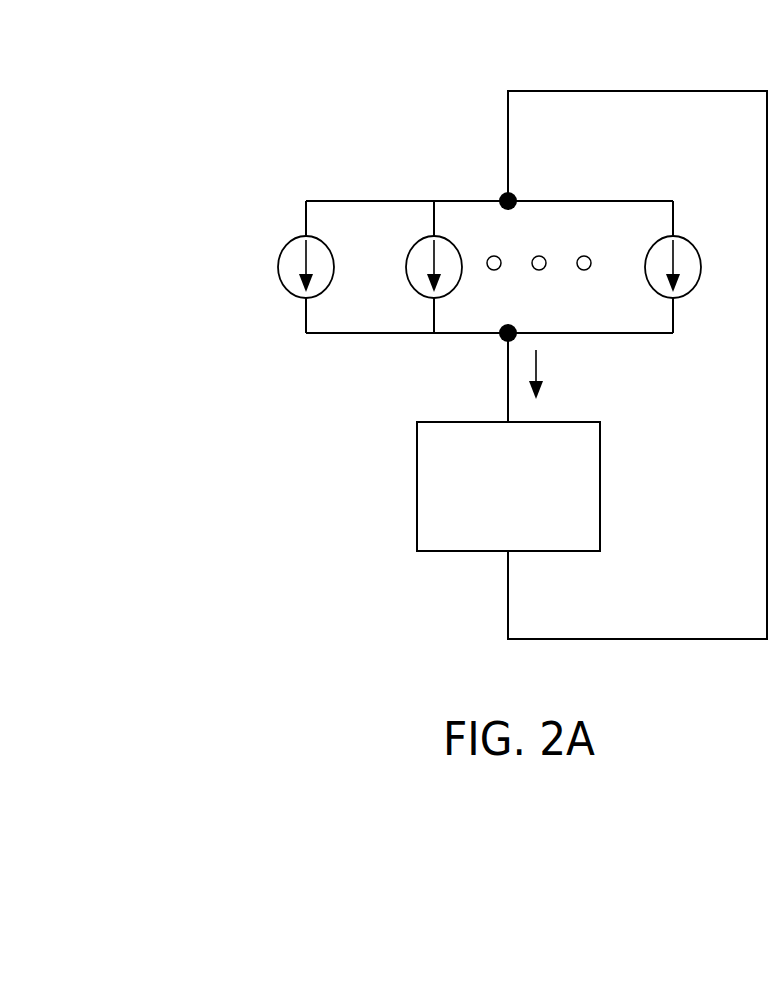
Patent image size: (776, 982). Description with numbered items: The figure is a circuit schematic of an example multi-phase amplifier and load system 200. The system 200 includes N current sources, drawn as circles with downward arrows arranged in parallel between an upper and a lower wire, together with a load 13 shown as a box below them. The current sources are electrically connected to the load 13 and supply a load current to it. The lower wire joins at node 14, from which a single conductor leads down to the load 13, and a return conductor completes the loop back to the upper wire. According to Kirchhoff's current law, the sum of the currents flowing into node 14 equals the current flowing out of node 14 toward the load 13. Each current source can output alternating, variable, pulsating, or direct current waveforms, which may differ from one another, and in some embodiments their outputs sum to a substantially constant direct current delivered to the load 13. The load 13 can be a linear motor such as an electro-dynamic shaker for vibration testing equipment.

The multi-phase amplifier and load system 200 is at (282, 121).
The node 14 is at (496, 273).
The load 13 is at (473, 421).